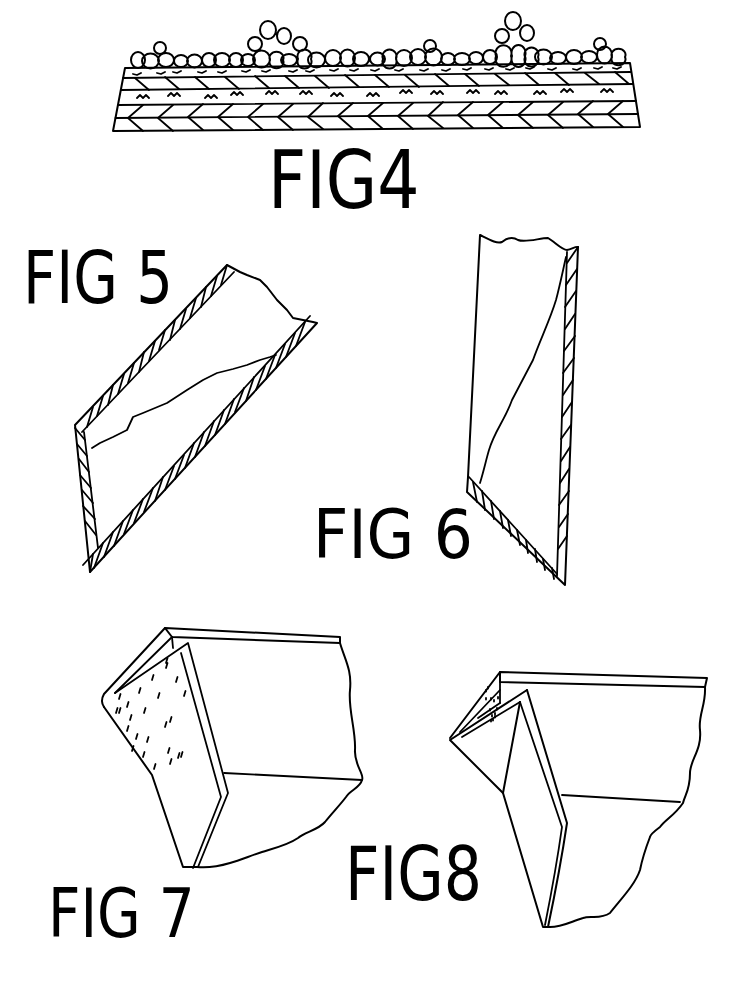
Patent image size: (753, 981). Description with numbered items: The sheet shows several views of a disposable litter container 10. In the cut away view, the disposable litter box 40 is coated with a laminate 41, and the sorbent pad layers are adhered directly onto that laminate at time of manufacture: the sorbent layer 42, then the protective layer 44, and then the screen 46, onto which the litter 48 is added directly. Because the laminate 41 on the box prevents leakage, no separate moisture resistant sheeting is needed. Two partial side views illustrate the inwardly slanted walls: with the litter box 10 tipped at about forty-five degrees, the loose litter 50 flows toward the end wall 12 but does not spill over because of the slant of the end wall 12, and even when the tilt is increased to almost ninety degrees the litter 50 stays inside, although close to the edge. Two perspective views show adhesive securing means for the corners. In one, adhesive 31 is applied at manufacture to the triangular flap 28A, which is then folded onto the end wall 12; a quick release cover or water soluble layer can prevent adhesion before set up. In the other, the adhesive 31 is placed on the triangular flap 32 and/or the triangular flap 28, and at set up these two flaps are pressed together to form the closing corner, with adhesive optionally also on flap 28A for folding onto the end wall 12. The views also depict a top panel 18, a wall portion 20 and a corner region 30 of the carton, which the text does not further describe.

In FIG. 5, the disposable litter container 10 is at (312, 266).
In FIG. 6, the disposable litter container 10 is at (597, 314).
In FIG. 5, the end wall 12 is at (88, 478).
In FIG. 6, the end wall 12 is at (533, 546).
In FIG. 8, the end wall 12 is at (523, 825).
In FIG. 7, the top panel of carton 18 is at (293, 649).
In FIG. 8, the top panel of carton 18 is at (607, 697).
In FIG. 7, the side wall of carton 20 is at (280, 755).
In FIG. 8, the side wall of carton 20 is at (626, 807).
In FIG. 8, the triangular flap 28 is at (473, 702).
In FIG. 7, the triangular flap 28A is at (155, 748).
In FIG. 8, the triangular flap 28A is at (483, 747).
In FIG. 7, the corner flange 30 is at (160, 770).
In FIG. 8, the corner flange 30 is at (492, 767).
In FIG. 7, the adhesive 31 is at (113, 717).
In FIG. 8, the adhesive 31 is at (500, 672).
In FIG. 8, the triangular flap 32 is at (481, 701).
In FIG. 4, the disposable litter box 40 is at (601, 2).
In FIG. 4, the laminate 41 is at (636, 104).
In FIG. 4, the sorbent layer 42 is at (636, 82).
In FIG. 4, the protective layer 44 is at (130, 78).
In FIG. 4, the screen 46 is at (137, 42).
In FIG. 4, the litter 48 is at (236, 49).
In FIG. 5, the loose litter 50 is at (207, 433).
In FIG. 6, the loose litter 50 is at (557, 413).